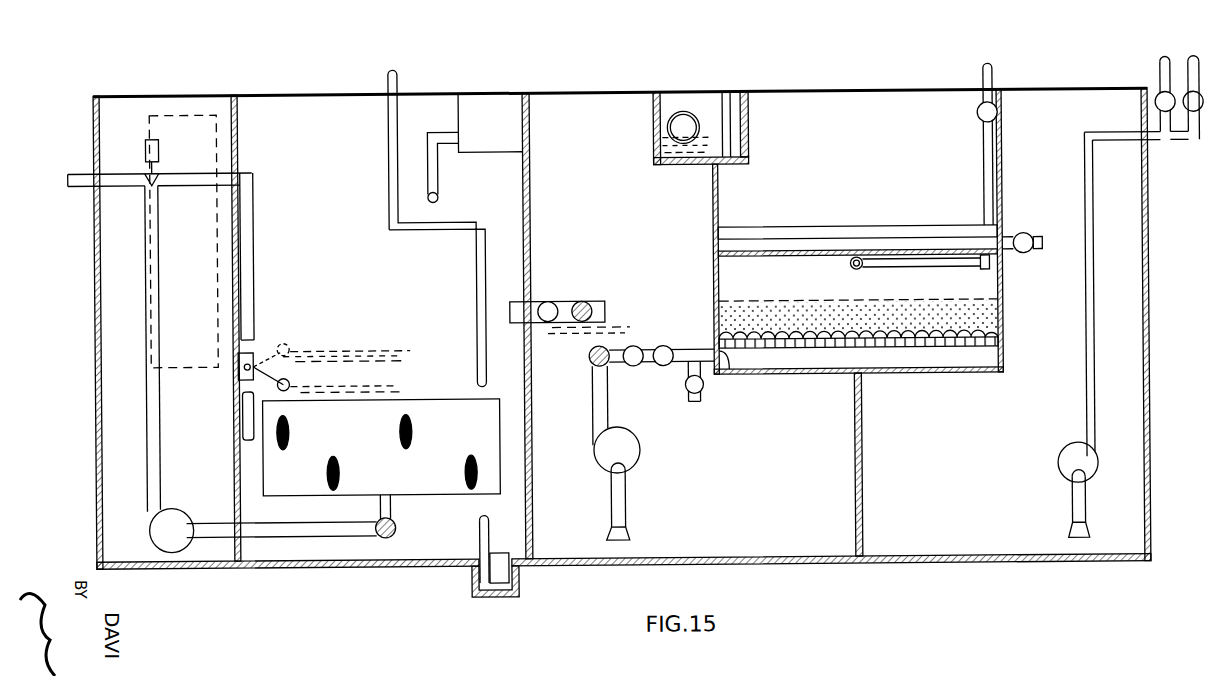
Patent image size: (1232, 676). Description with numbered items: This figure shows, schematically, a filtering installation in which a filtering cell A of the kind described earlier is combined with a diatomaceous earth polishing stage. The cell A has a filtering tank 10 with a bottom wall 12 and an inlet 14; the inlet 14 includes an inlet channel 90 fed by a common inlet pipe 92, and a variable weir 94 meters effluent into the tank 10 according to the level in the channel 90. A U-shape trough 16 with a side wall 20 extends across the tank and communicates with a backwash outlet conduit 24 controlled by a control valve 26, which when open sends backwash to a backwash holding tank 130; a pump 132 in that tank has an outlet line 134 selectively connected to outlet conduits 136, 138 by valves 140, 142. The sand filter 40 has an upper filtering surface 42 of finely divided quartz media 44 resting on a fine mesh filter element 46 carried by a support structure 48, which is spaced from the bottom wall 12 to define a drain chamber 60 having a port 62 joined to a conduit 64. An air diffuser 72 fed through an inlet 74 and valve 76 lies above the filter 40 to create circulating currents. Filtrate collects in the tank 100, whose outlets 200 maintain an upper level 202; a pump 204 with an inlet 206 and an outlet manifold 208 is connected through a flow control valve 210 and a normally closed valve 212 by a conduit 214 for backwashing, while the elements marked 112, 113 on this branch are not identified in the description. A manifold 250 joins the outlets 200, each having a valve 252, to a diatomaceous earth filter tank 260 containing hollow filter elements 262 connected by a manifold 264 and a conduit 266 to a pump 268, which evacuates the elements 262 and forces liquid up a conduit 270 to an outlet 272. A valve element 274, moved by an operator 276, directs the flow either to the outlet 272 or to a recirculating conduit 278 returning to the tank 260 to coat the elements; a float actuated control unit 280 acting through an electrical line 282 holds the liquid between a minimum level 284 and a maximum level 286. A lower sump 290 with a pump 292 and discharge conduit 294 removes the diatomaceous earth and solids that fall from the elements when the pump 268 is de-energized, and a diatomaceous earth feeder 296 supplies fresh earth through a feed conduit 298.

The filtering cell A is at (905, 90).
The filtering tank 10 is at (1003, 128).
The bottom wall 12 is at (905, 375).
The inlet 14 is at (751, 118).
The U-shape trough 16 is at (832, 226).
The side wall 20 is at (880, 228).
The backwash outlet conduit 24 is at (1005, 235).
The control valve 26 is at (1025, 254).
The sand filter 40 is at (980, 305).
The upper filtering surface 42 is at (778, 300).
The finely divided quartz media 44 is at (689, 292).
The fine mesh filter element 46 is at (990, 331).
The support structure 48 is at (982, 345).
The drain chamber 60 is at (825, 352).
The port 62 is at (724, 370).
The conduit 64 is at (680, 381).
The air diffuser 72 is at (853, 266).
The inlet 74 is at (984, 161).
The valve 76 is at (978, 113).
The inlet channel 90 is at (654, 107).
The common inlet pipe 92 is at (684, 110).
The variable weir 94 is at (735, 148).
The tank 100 is at (592, 93).
The valve 112 is at (691, 398).
The drain outlet 113 is at (702, 393).
The backwash holding tank 130 is at (1080, 91).
The pump 132 is at (1058, 456).
The outlet line 134 is at (1085, 401).
The outlet conduit 136 is at (1160, 70).
The outlet conduit 138 is at (1198, 72).
The valve 140 is at (1160, 98).
The valve 142 is at (1200, 136).
The outlet 200 is at (510, 311).
The upper level 202 is at (597, 325).
The pump 204 is at (640, 452).
The inlet 206 is at (625, 491).
The outlet manifold 208 is at (576, 396).
The flow control valve 210 is at (631, 369).
The normally closed valve 212 is at (664, 346).
The conduit 214 is at (634, 346).
The manifold 250 is at (586, 300).
The valve 252 is at (550, 300).
The diatomaceous earth filter tank 260 is at (288, 93).
The hollow filter elements 262 is at (430, 397).
The manifold 264 is at (395, 525).
The conduit 266 is at (281, 520).
The pump 268 is at (186, 508).
The conduit 270 is at (161, 342).
The outlet 272 is at (80, 184).
The valve element 274 is at (157, 184).
The operator 276 is at (160, 148).
The recirculating conduit 278 is at (254, 214).
The control unit 280 is at (254, 354).
The electrical line 282 is at (219, 144).
The minimum level 284 is at (376, 390).
The maximum level 286 is at (362, 349).
The lower sump 290 is at (518, 580).
The pump 292 is at (497, 585).
The discharge conduit 294 is at (486, 276).
The diatomaceous earth feeder 296 is at (493, 97).
The feed conduit 298 is at (440, 178).